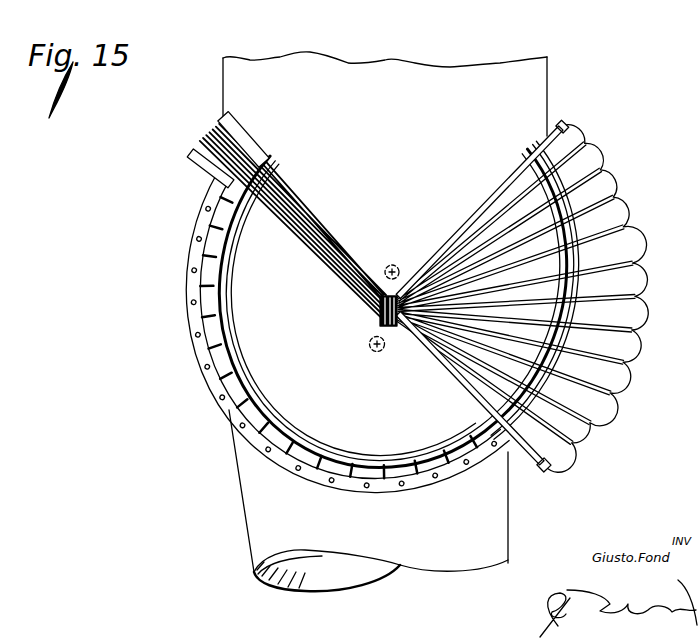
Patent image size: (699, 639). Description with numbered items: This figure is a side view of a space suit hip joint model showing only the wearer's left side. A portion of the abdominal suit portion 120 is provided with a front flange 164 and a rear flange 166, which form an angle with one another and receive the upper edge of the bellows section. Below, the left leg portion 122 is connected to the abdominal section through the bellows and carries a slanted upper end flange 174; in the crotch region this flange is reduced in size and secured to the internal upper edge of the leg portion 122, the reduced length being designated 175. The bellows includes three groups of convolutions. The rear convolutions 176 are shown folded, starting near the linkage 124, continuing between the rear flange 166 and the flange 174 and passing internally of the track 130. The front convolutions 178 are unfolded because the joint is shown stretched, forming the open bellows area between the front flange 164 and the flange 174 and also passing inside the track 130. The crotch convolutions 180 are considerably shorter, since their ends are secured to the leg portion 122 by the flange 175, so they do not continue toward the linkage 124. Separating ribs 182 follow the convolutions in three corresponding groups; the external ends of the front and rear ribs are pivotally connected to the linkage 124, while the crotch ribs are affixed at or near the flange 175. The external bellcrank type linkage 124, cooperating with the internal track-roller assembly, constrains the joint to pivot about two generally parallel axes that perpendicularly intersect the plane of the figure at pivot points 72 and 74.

The pivot point 72 is at (396, 265).
The pivot point 74 is at (371, 351).
The abdominal suit portion 120 is at (411, 99).
The left leg portion 122 is at (408, 551).
The linkage 124 is at (377, 327).
The track 130 is at (233, 306).
The front flange 164 is at (569, 119).
The rear flange 166 is at (254, 148).
The slanted upper end flange 174 is at (540, 478).
The reduced length of the flange 175 is at (418, 492).
The rear convolutions 176 is at (196, 134).
The front convolutions 178 is at (626, 210).
The crotch convolutions 180 is at (318, 452).
The separating ribs 182 is at (618, 278).